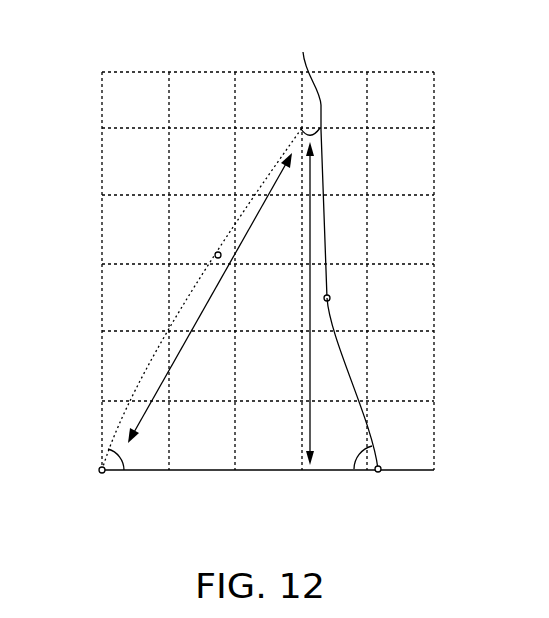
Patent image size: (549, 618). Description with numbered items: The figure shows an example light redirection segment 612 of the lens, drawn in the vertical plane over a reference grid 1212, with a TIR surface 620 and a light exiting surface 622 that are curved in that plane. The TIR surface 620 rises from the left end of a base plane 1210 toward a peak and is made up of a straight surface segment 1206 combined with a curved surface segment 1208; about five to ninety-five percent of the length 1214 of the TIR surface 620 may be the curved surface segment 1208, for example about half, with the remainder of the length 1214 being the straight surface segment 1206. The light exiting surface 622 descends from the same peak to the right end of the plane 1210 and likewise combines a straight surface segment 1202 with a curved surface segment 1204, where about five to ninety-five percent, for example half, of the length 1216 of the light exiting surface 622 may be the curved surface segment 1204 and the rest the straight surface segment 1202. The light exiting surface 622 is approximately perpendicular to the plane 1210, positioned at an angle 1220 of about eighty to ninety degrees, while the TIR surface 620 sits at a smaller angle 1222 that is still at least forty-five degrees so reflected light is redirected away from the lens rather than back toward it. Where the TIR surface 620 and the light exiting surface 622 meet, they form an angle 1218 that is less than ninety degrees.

The light redirection segment 612 is at (306, 65).
The TIR surface 620 is at (252, 202).
The light exiting surface 622 is at (325, 190).
The straight surface segment 1202 is at (327, 248).
The curved surface segment 1204 is at (347, 375).
The straight surface segment 1206 is at (277, 160).
The curved surface segment 1208 is at (147, 375).
The plane 1210 is at (405, 472).
The grid 1212 is at (102, 92).
The length of the TIR surface 1214 is at (190, 338).
The length of the light exiting surface 1216 is at (308, 405).
The angle 1218 is at (302, 128).
The angle 1220 is at (377, 458).
The angle 1222 is at (125, 458).